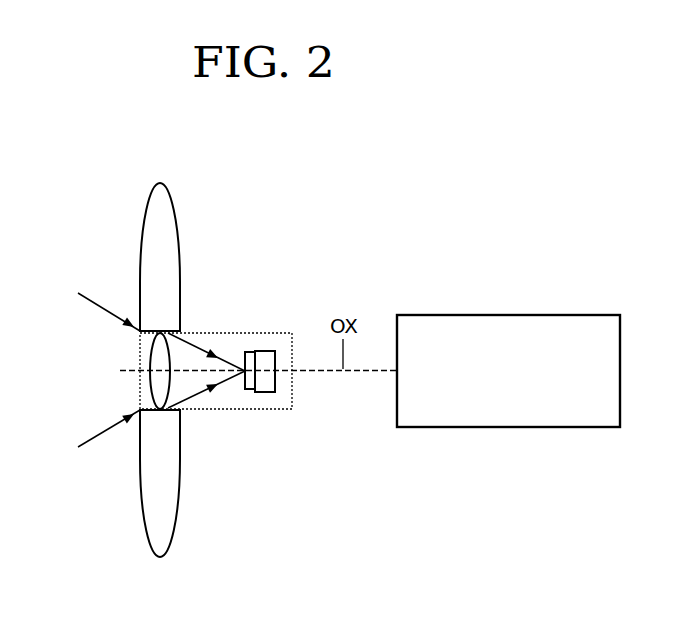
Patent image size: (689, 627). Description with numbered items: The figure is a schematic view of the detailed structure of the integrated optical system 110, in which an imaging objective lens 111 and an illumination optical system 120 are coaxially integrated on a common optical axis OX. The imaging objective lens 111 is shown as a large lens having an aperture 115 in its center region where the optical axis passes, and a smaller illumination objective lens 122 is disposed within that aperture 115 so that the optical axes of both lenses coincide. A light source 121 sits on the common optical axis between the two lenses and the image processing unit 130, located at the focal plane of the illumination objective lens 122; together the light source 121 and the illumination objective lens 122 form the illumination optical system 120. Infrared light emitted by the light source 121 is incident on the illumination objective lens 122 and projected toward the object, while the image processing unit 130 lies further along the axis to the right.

The optical system 110 is at (176, 396).
The imaging objective lens 111 is at (148, 252).
The aperture 115 is at (140, 342).
The illumination optical system 120 is at (216, 379).
The light source 121 is at (262, 351).
The illumination objective lens 122 is at (153, 390).
The image processing unit 130 is at (508, 315).